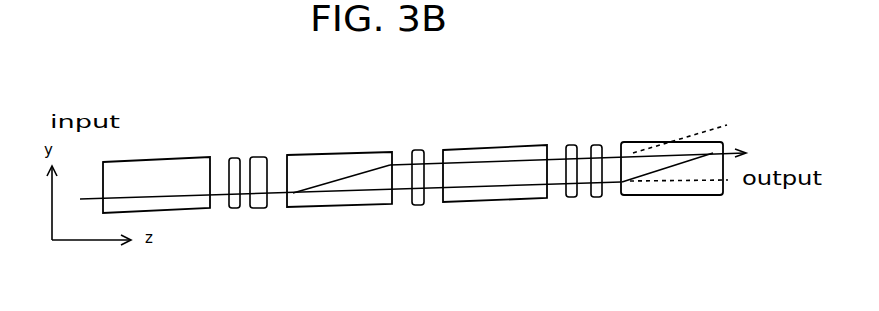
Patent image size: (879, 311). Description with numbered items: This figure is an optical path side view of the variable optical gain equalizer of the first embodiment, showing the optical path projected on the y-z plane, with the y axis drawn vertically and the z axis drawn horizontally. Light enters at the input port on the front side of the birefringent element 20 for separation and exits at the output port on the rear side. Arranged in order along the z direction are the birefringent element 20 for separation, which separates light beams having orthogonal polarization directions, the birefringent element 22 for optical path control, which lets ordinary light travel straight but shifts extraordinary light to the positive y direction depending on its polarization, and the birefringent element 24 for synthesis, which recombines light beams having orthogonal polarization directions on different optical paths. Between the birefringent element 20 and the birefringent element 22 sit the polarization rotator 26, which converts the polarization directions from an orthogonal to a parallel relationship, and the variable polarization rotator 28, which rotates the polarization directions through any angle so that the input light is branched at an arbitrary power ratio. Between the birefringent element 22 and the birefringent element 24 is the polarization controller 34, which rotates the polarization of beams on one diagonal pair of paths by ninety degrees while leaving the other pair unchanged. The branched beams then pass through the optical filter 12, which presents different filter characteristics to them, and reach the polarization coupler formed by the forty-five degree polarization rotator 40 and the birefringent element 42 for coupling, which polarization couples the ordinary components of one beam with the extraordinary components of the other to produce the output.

The optical filter 12 is at (569, 141).
The birefringent element for separation 20 is at (145, 172).
The birefringent element for optical path control 22 is at (347, 160).
The birefringent element for synthesis 24 is at (498, 154).
The polarization rotator 26 is at (235, 214).
The variable polarization rotator 28 is at (255, 155).
The polarization controller 34 is at (416, 147).
The 45-degree polarization rotator 40 is at (596, 201).
The birefringent element for coupling 42 is at (688, 203).